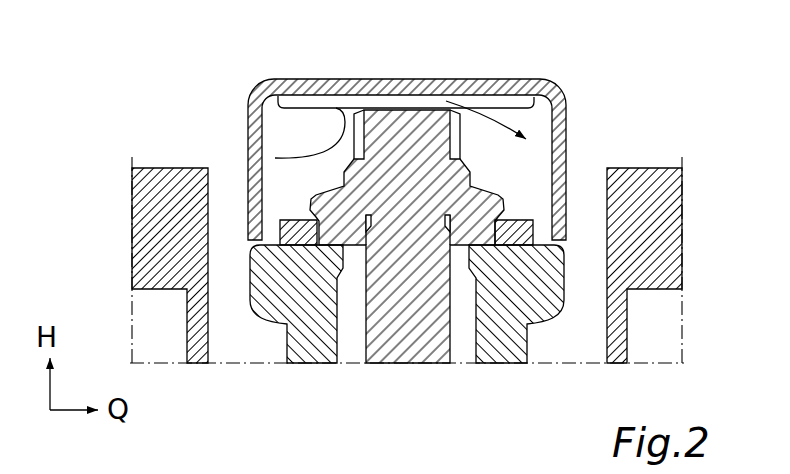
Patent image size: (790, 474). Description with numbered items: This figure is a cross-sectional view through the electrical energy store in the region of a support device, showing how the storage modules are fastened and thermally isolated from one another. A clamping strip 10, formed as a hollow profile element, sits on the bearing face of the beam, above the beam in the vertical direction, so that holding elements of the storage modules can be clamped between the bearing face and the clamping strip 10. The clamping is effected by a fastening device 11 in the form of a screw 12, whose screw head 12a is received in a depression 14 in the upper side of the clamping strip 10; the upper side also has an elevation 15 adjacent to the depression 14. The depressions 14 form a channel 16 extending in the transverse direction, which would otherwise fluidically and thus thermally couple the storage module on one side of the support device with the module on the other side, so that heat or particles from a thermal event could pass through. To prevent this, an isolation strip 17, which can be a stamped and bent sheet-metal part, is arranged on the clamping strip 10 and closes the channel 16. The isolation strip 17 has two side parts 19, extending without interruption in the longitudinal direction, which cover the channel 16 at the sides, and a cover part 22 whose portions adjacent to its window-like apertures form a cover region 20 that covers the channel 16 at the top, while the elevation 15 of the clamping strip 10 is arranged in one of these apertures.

The clamping strip 10 is at (505, 353).
The fastening device 11 is at (514, 178).
The screw 12 is at (395, 355).
The screw head 12a is at (437, 126).
The depression 14 is at (268, 240).
The elevation 15 is at (345, 100).
The channel 16 is at (254, 84).
The isolation strip 17 is at (244, 146).
The side part 19 is at (248, 123).
The cover region 20 is at (431, 73).
The cover part 22 is at (284, 108).